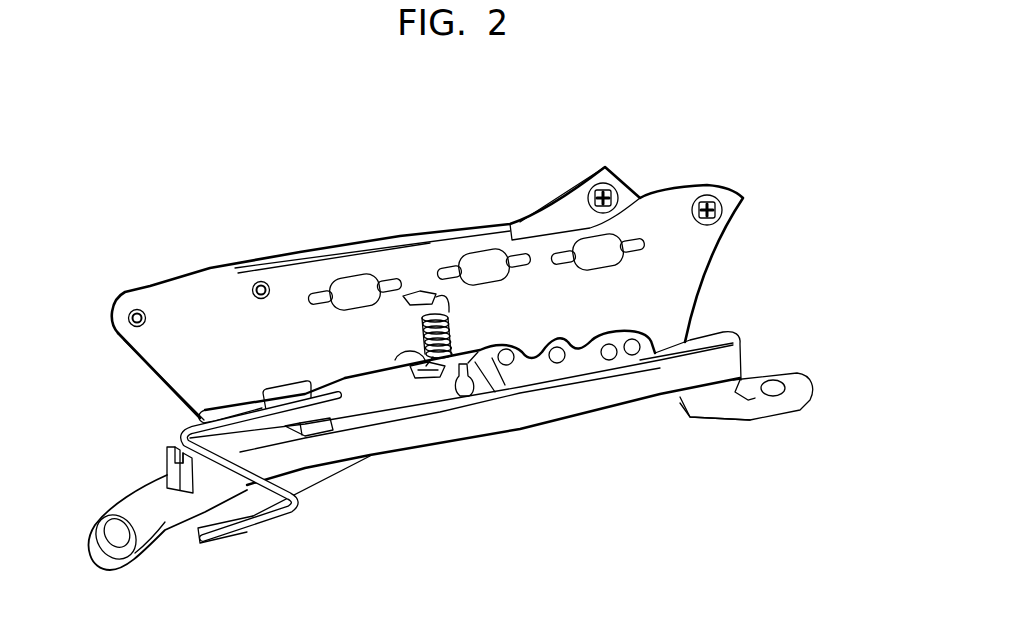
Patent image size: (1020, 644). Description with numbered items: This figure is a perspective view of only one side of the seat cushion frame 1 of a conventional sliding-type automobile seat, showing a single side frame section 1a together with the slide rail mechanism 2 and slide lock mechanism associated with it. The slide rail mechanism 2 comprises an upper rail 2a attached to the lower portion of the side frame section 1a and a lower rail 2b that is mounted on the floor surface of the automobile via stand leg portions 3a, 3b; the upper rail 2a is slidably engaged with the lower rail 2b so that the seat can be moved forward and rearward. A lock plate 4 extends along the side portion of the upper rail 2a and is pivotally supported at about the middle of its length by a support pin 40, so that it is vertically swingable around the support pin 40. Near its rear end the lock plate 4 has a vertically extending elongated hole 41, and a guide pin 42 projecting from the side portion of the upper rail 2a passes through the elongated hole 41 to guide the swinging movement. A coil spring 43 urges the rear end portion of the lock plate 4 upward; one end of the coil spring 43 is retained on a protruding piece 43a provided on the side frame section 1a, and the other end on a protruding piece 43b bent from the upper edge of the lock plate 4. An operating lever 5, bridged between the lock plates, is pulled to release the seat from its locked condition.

The seat cushion frame 1 is at (212, 262).
The side frame section 1a is at (304, 272).
The slide rail mechanism 2 is at (373, 457).
The upper rail 2a is at (517, 377).
The lower rail 2b is at (607, 393).
The stand leg portion 3a is at (147, 488).
The stand leg portion 3b is at (792, 384).
The lock plate 4 is at (360, 372).
The operating lever 5 is at (255, 527).
The support pin 40 is at (293, 437).
The elongated hole 41 is at (465, 396).
The guide pin 42 is at (495, 378).
The coil spring 43 is at (450, 340).
The protruding piece 43a is at (417, 293).
The protruding piece 43b is at (405, 376).